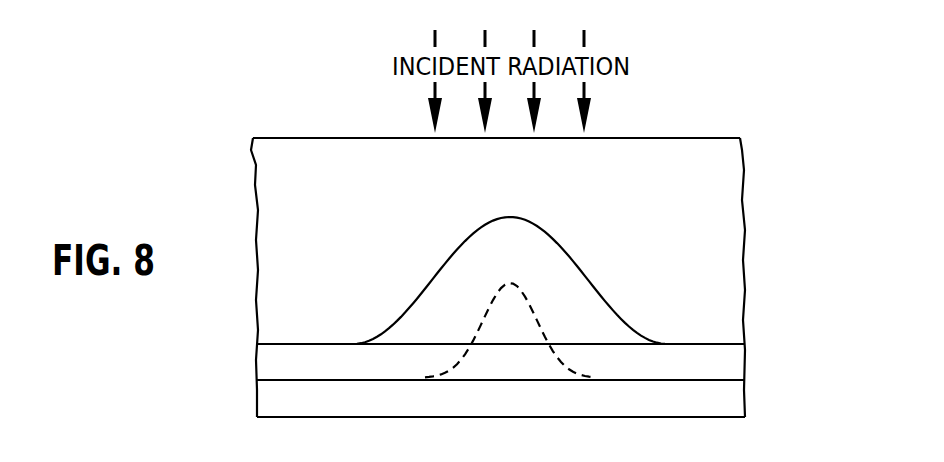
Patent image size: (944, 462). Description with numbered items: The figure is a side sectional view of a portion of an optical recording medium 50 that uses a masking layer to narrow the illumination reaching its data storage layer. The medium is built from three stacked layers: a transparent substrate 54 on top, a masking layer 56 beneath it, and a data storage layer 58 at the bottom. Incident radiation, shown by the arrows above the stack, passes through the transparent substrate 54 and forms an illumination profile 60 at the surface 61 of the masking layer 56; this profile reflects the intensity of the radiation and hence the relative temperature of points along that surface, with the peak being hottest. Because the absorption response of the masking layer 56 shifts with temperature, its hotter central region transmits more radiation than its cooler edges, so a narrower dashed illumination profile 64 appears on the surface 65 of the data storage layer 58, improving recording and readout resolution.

The optical recording medium 50 is at (270, 118).
The transparent substrate 54 is at (307, 176).
The masking layer 56 is at (307, 377).
The data storage layer 58 is at (307, 414).
The illumination profile 60 is at (440, 265).
The surface of the masking layer 61 is at (690, 343).
The dashed illumination profile 64 is at (453, 363).
The surface of the data storage layer 65 is at (662, 381).